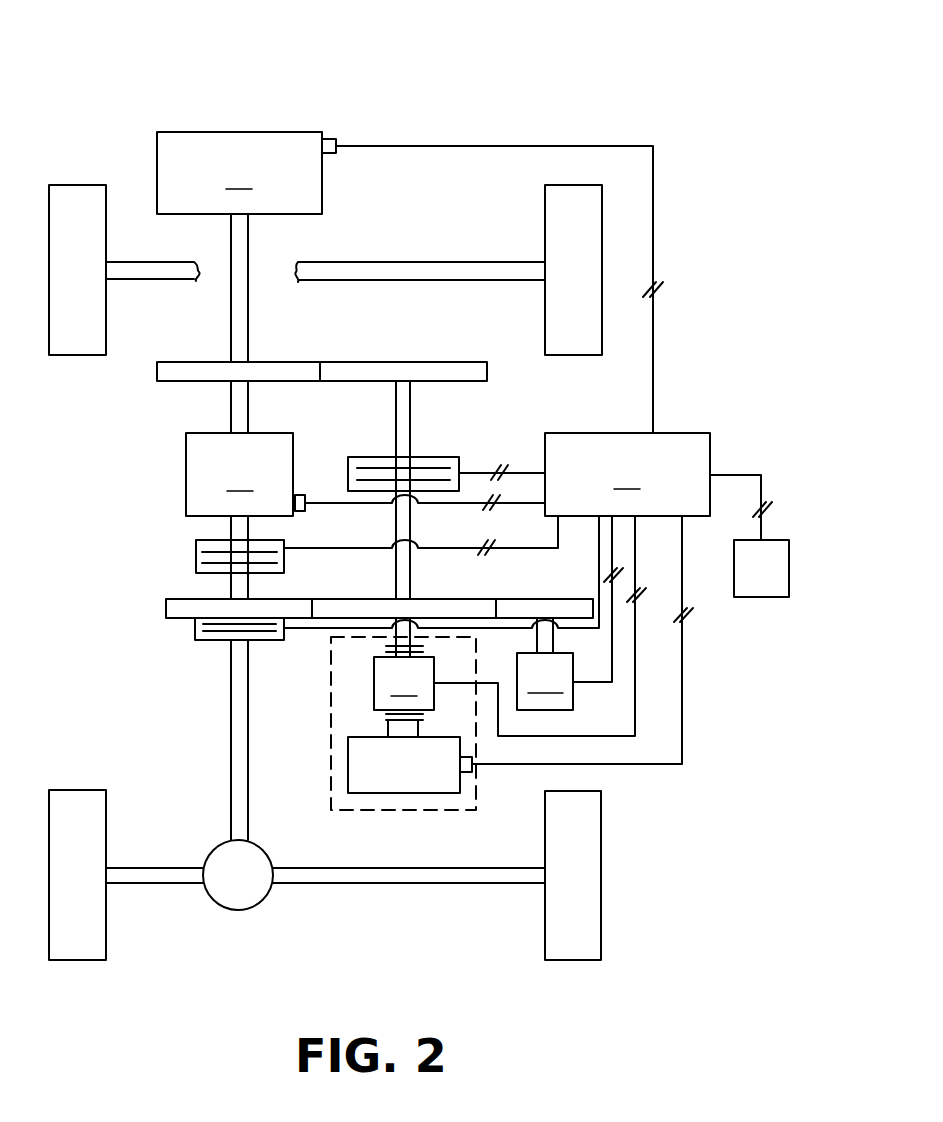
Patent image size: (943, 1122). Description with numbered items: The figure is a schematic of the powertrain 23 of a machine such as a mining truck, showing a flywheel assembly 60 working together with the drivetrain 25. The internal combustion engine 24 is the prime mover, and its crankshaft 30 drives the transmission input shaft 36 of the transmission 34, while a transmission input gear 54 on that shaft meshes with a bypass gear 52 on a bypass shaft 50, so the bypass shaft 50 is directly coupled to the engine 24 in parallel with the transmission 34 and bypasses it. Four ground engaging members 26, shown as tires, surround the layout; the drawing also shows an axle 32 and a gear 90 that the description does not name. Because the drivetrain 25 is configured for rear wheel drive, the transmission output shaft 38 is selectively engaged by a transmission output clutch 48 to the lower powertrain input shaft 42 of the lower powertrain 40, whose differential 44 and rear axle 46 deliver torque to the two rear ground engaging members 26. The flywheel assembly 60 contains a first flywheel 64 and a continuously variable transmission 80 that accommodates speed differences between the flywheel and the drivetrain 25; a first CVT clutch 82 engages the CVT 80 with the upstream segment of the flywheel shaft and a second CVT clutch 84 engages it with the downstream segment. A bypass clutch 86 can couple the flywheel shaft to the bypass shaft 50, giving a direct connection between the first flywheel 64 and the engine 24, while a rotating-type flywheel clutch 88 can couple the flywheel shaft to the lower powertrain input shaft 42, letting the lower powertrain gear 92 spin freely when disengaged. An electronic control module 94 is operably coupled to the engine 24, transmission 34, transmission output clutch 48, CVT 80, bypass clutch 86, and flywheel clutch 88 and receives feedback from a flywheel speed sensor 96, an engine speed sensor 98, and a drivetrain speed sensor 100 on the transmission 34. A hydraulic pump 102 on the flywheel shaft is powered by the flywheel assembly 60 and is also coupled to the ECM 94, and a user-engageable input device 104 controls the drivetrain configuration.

The powertrain 23 is at (154, 88).
The internal combustion engine 24 is at (239, 173).
The drivetrain 25 is at (168, 459).
The ground engaging members 26 is at (72, 197).
The crankshaft 30 is at (240, 225).
The front axle 32 is at (392, 270).
The transmission 34 is at (239, 474).
The transmission input shaft 36 is at (238, 407).
The transmission output shaft 38 is at (237, 528).
The lower powertrain 40 is at (210, 907).
The lower powertrain input shaft 42 is at (237, 773).
The differential 44 is at (243, 885).
The rear axle 46 is at (333, 877).
The transmission output clutch 48 is at (202, 555).
The bypass shaft 50 is at (400, 403).
The bypass gear 52 is at (467, 368).
The transmission input gear 54 is at (285, 373).
The flywheel assembly 60 is at (322, 770).
The first flywheel 64 is at (400, 773).
The continuously variable transmission 80 is at (510, 626).
The first CVT clutch 82 is at (392, 648).
The second CVT clutch 84 is at (388, 717).
The bypass clutch 86 is at (433, 463).
The flywheel clutch 88 is at (202, 641).
The gear 90 is at (380, 612).
The lower powertrain gear 92 is at (183, 610).
The electronic control module 94 is at (627, 474).
The flywheel speed sensor 96 is at (465, 767).
The engine speed sensor 98 is at (329, 145).
The drivetrain speed sensor 100 is at (298, 497).
The hydraulic pump 102 is at (570, 613).
The input device 104 is at (772, 572).